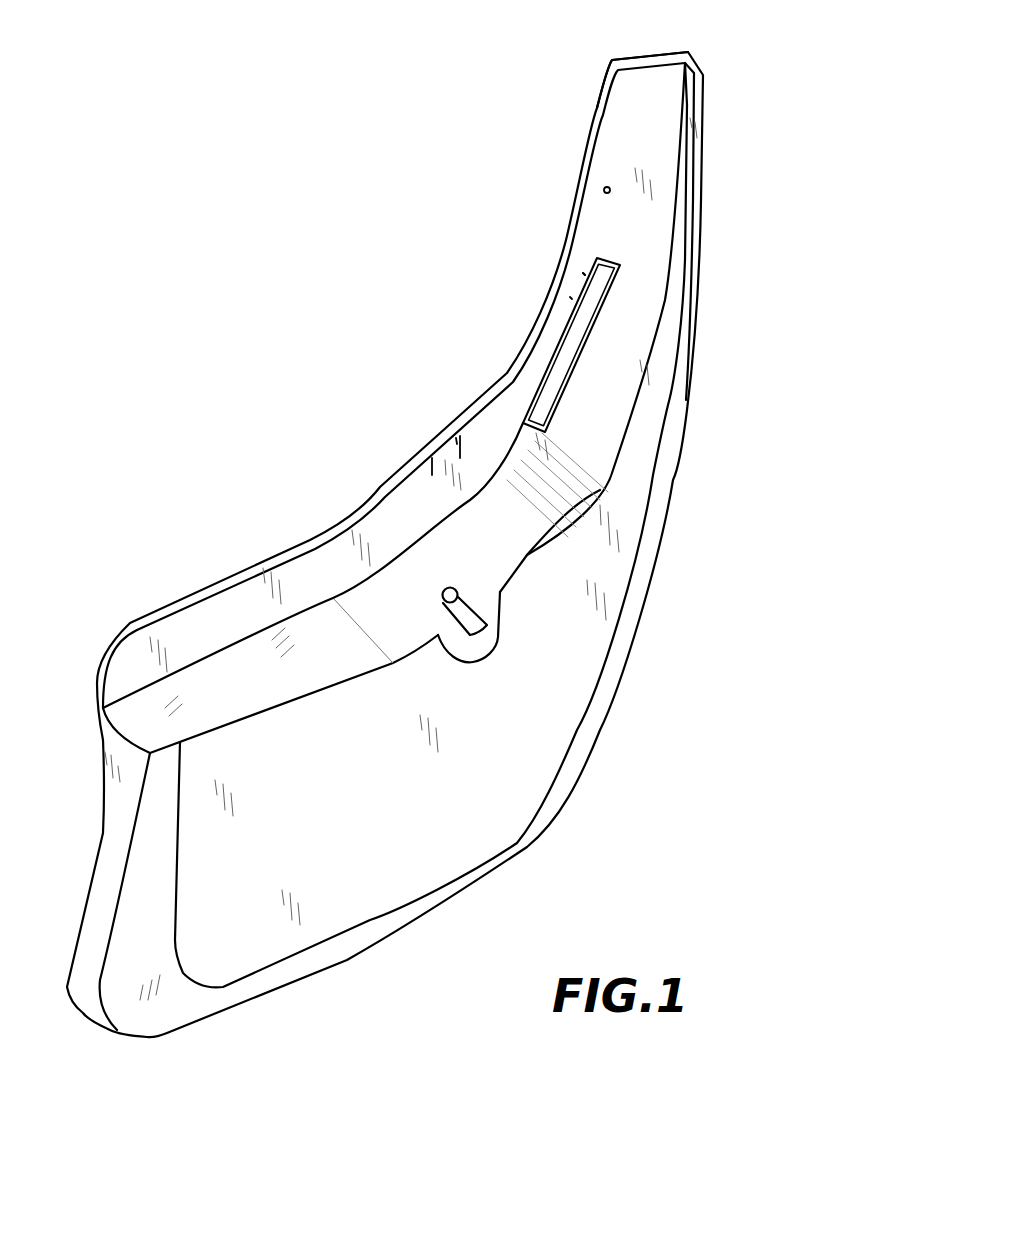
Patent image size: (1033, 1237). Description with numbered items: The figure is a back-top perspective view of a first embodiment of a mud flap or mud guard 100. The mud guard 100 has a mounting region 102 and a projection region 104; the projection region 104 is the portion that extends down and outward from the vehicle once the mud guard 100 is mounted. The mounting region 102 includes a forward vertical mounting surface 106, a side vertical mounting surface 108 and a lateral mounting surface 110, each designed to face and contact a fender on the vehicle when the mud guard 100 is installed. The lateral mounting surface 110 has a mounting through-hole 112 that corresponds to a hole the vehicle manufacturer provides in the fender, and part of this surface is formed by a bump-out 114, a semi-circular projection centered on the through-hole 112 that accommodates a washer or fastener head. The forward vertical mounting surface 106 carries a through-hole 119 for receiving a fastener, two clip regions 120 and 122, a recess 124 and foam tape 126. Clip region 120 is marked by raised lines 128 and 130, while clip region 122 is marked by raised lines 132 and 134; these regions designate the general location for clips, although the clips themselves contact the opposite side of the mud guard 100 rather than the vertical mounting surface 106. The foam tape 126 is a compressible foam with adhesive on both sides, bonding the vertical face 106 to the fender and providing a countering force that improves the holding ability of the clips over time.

The mud guard 100 is at (255, 322).
The mounting region 102 is at (500, 377).
The projection region 104 is at (535, 770).
The forward vertical mounting surface 106 is at (620, 110).
The side vertical mounting surface 108 is at (673, 167).
The lateral mounting surface 110 is at (600, 490).
The mounting through-hole 112 is at (458, 597).
The bump-out 114 is at (470, 647).
The through-hole 119 is at (604, 189).
The clip region 120 is at (456, 441).
The clip region 122 is at (583, 273).
The recess 124 is at (617, 265).
The foam tape 126 is at (617, 292).
The raised line 128 is at (432, 467).
The raised line 130 is at (460, 440).
The raised line 132 is at (570, 297).
The raised line 134 is at (583, 273).